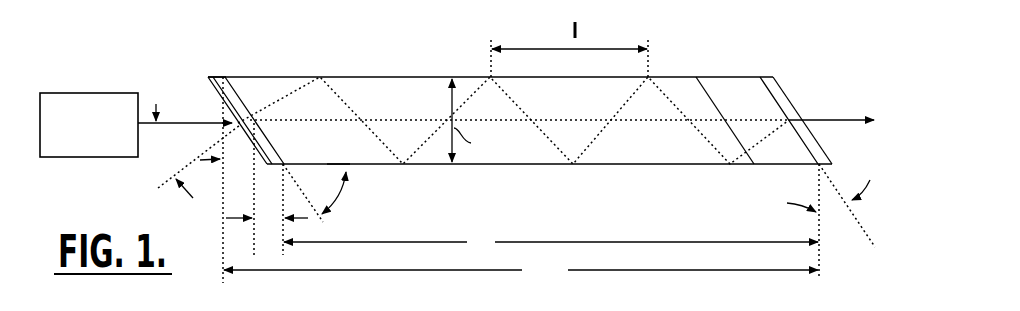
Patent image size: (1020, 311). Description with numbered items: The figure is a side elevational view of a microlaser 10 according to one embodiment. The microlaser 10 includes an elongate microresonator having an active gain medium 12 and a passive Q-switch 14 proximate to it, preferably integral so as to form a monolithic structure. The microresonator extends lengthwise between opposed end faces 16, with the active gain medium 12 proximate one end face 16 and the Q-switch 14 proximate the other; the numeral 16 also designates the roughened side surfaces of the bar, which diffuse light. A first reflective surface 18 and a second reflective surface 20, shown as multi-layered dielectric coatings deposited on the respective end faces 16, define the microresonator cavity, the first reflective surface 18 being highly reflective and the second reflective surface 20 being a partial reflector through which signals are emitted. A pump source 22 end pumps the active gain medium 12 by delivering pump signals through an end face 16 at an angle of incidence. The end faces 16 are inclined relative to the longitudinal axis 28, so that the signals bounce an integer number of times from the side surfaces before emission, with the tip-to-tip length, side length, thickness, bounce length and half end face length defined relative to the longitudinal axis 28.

The microlaser 10 is at (714, 42).
The active gain medium 12 is at (505, 147).
The Q-switch 14 is at (780, 148).
The end faces 16 is at (276, 160).
The first reflective surface 18 is at (221, 96).
The second reflective surface 20 is at (783, 97).
The pump source 22 is at (93, 93).
The longitudinal axis 28 is at (207, 78).